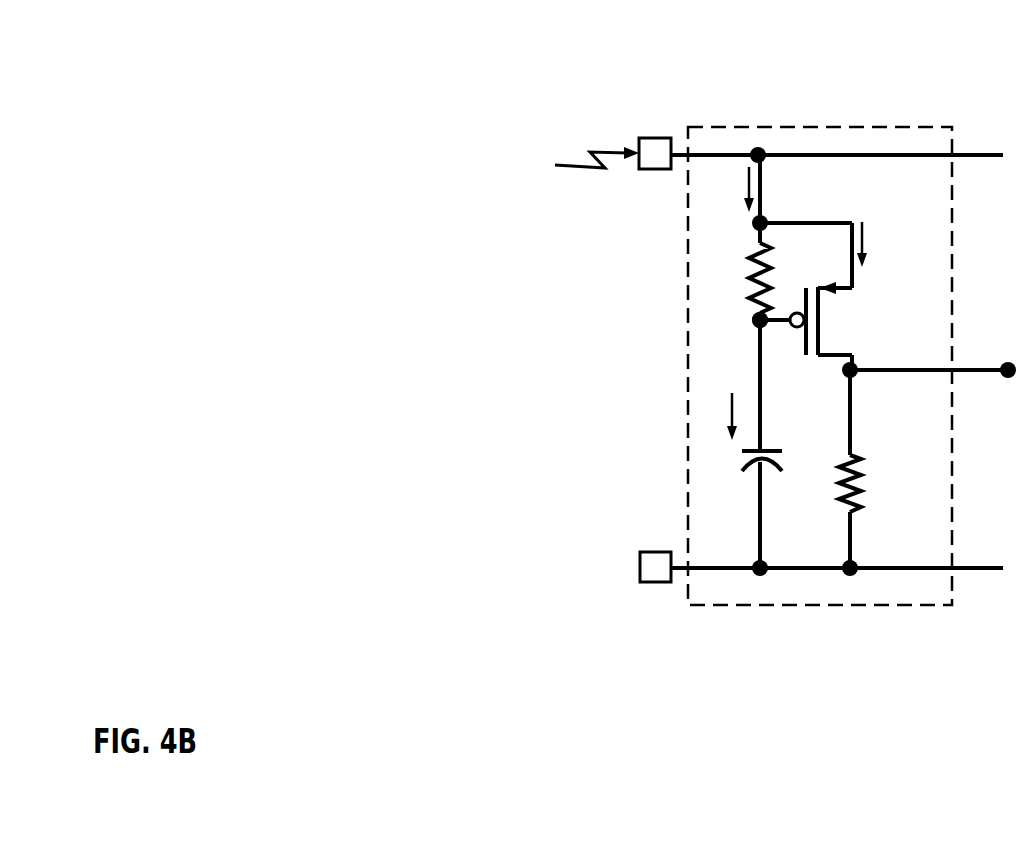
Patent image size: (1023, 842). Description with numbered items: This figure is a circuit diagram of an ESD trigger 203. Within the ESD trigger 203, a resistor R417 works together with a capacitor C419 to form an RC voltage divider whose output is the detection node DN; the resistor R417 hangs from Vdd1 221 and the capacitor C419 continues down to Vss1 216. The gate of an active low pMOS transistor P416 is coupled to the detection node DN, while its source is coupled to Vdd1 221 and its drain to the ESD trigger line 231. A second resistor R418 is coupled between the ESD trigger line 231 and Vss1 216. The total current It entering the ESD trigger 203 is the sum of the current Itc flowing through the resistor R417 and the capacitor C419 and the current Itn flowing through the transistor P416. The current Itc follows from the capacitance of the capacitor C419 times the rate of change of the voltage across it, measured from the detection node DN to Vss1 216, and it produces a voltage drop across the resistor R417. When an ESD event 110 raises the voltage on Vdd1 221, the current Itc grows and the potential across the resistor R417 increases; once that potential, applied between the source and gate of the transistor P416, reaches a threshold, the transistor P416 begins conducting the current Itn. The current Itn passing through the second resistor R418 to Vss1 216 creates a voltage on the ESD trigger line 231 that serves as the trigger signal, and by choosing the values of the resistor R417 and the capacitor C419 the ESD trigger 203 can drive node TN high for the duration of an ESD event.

The ESD trigger 203 is at (735, 127).
The Vdd1 221 is at (652, 163).
The Vss1 216 is at (650, 577).
The ESD event 110 is at (567, 151).
The ESD trigger line 231 is at (910, 377).
The node TN is at (1005, 362).
The detection node DN is at (755, 322).
The resistor R417 is at (750, 272).
The active low pMOS transistor P416 is at (816, 326).
The capacitor C419 is at (745, 460).
The second resistor R418 is at (838, 480).
The current It is at (738, 189).
The current Itn is at (872, 244).
The current Itc is at (717, 416).